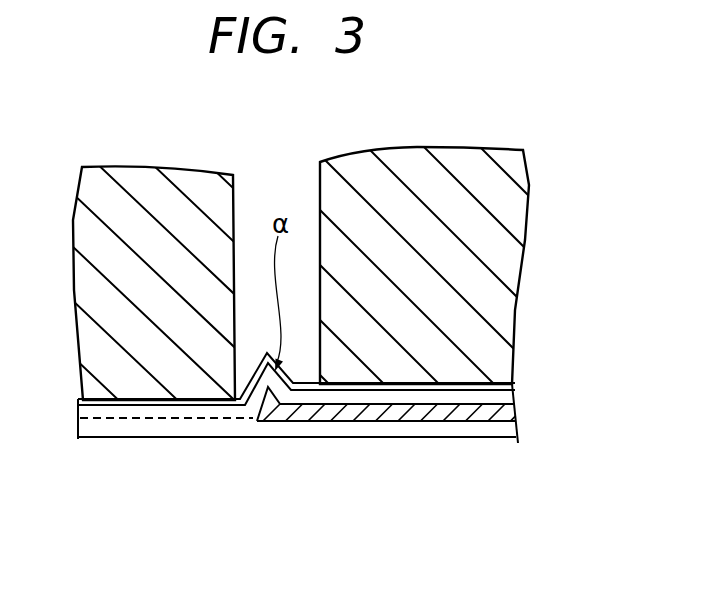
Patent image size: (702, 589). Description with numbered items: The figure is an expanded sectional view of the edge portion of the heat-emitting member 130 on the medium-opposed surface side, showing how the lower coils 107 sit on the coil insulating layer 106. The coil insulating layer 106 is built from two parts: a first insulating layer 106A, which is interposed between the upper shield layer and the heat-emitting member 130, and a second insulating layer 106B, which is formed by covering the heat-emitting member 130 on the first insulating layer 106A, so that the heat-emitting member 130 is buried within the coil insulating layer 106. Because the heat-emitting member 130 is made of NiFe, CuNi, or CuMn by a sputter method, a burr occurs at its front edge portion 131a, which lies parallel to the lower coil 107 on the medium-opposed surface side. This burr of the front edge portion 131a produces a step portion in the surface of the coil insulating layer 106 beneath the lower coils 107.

The lower coil 107 is at (144, 166).
The coil insulating layer 106 is at (298, 456).
The first insulating layer 106A is at (187, 424).
The second insulating layer 106B is at (117, 408).
The heat-emitting member 130 is at (402, 407).
The front edge portion 131a is at (277, 397).